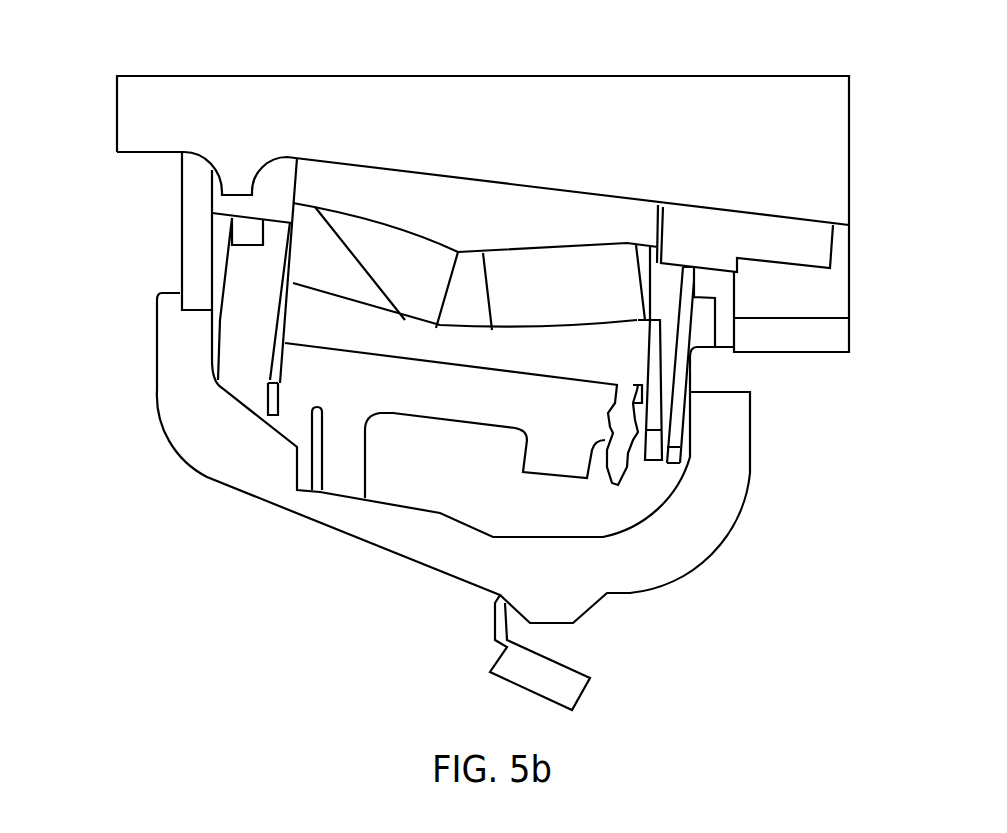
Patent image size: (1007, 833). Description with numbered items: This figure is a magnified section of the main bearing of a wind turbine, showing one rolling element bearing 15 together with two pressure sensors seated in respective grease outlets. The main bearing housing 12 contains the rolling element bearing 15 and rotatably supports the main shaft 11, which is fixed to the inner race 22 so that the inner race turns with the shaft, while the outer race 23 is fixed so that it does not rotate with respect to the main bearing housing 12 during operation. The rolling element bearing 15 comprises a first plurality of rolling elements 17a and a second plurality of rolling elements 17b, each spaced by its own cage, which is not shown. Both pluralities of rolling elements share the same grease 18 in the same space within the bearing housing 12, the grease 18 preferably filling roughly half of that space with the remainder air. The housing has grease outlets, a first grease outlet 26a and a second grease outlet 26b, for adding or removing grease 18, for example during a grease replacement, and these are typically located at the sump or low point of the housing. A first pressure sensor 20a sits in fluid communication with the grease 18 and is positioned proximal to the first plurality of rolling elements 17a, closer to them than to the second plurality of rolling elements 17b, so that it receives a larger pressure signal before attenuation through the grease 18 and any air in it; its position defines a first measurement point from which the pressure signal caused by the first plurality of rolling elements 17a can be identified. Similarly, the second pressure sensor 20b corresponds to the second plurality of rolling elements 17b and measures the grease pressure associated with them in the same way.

The main shaft 11 is at (780, 100).
The main bearing housing 12 is at (558, 477).
The rolling element bearing 15 is at (363, 163).
The first plurality of rolling elements 17a is at (390, 223).
The second plurality of rolling elements 17b is at (612, 262).
The grease 18 is at (472, 268).
The first pressure sensor 20a is at (268, 395).
The second pressure sensor 20b is at (667, 450).
The inner race 22 is at (578, 200).
The outer race 23 is at (632, 360).
The first grease outlet 26a is at (272, 355).
The second grease outlet 26b is at (672, 398).